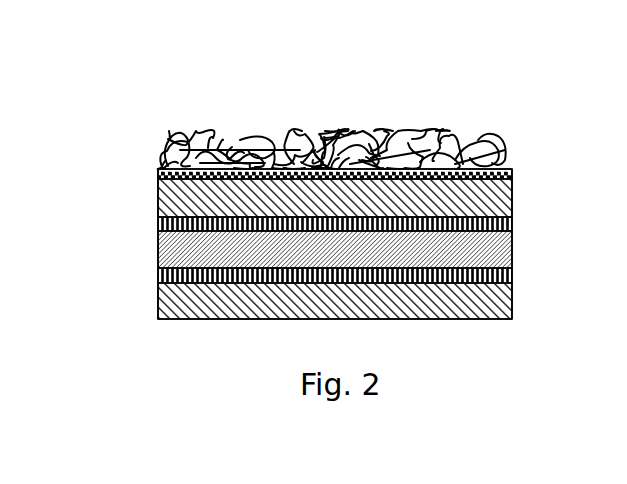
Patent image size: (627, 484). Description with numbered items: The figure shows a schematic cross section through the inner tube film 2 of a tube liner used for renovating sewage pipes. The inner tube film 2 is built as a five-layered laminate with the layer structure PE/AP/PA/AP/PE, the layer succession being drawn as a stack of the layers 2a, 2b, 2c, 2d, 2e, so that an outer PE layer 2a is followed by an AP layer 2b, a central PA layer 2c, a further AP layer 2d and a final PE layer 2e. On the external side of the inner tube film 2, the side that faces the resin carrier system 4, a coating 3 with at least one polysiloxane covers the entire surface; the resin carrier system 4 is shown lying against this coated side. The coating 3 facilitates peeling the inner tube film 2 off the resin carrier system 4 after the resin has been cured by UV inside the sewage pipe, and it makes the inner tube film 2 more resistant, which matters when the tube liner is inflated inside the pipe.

The inner tube film 2 is at (533, 183).
The PE layer 2a is at (160, 197).
The AP layer 2b is at (160, 223).
The PA layer 2c is at (160, 253).
The AP layer 2d is at (160, 275).
The PE layer 2e is at (160, 298).
The coating 3 is at (470, 172).
The resin carrier system 4 is at (313, 147).